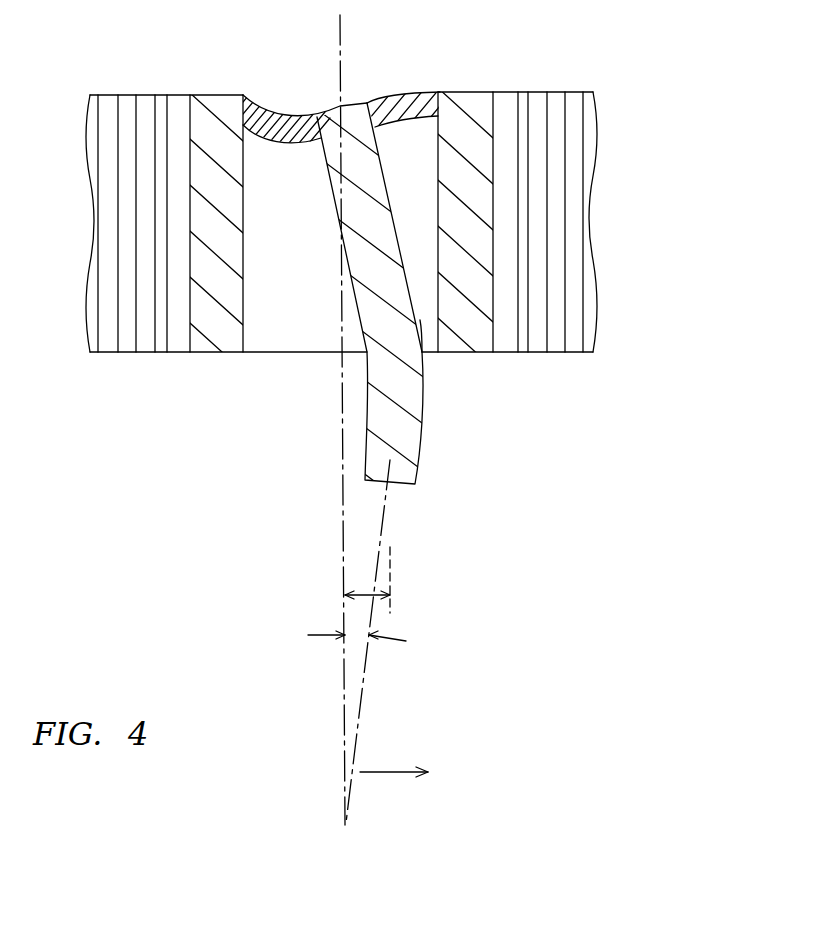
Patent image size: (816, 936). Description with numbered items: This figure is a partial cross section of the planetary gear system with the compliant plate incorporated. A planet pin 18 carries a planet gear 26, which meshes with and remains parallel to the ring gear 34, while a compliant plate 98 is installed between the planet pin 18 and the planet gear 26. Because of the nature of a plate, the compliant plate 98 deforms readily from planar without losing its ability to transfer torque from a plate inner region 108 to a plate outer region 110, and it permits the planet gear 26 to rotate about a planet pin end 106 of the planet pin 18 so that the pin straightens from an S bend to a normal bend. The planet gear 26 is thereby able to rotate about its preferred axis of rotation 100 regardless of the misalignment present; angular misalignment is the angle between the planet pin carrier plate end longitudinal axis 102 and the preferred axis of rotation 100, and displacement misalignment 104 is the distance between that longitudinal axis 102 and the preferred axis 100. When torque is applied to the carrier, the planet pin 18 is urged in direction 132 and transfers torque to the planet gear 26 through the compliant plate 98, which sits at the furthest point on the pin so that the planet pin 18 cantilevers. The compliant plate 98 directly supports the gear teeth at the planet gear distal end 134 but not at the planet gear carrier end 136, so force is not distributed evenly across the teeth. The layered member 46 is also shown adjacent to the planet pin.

The planet pin 18 is at (423, 421).
The planet gear 26 is at (480, 103).
The ring gear 34 is at (568, 92).
The first layered member 46 is at (152, 120).
The compliant plate 98 is at (388, 92).
The preferred axis of rotation 100 is at (340, 30).
The planet pin carrier plate end longitudinal axis 102 is at (362, 680).
The displacement misalignment 104 is at (368, 593).
The planet pin end 106 is at (327, 110).
The plate inner region 108 is at (312, 133).
The plate outer region 110 is at (262, 103).
The direction 132 is at (392, 767).
The planet gear distal end 134 is at (426, 100).
The planet gear carrier end 136 is at (436, 337).